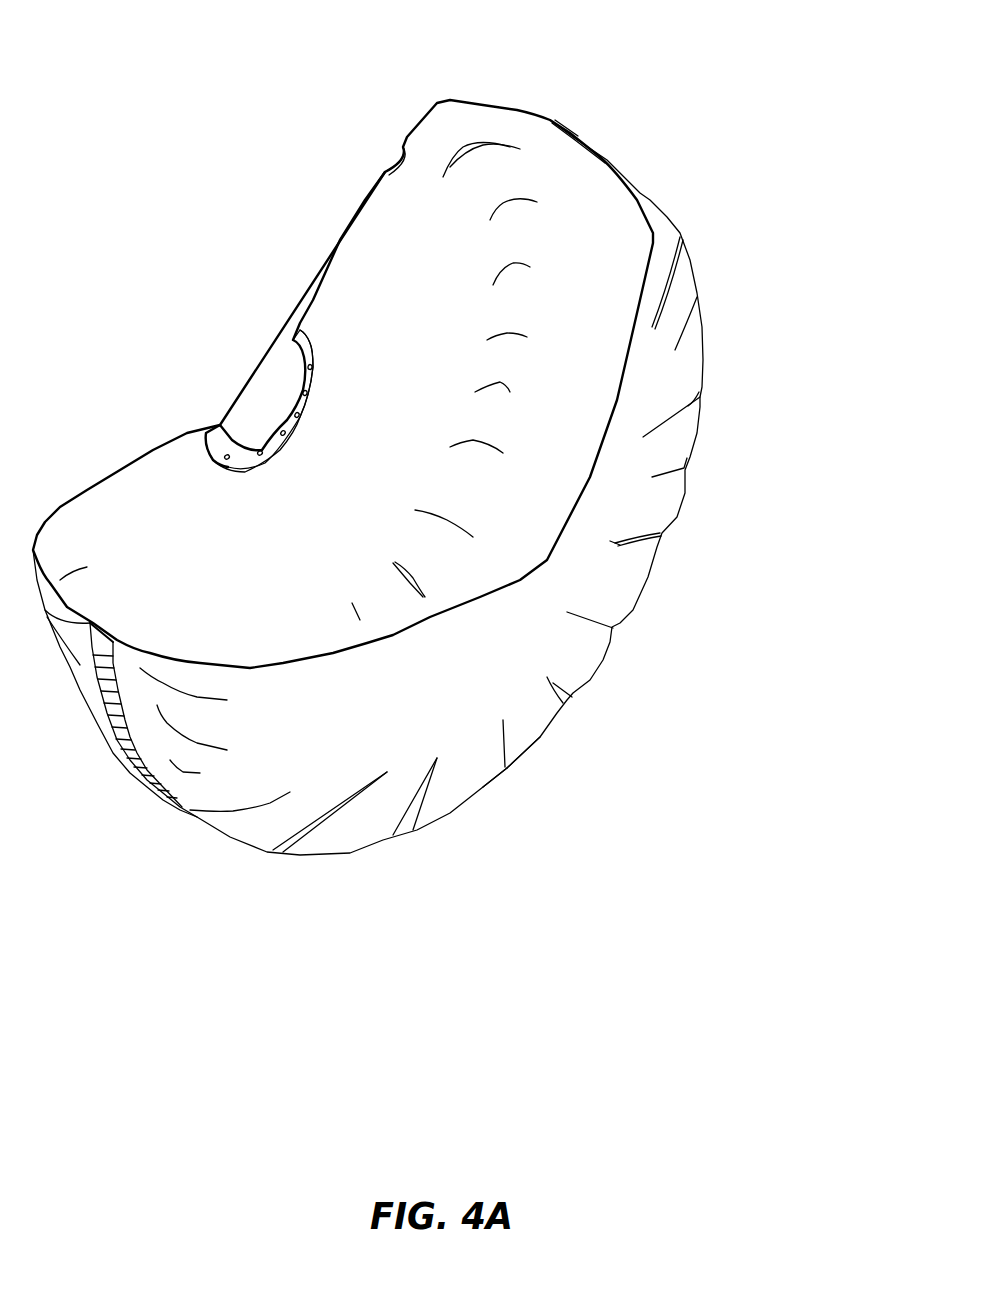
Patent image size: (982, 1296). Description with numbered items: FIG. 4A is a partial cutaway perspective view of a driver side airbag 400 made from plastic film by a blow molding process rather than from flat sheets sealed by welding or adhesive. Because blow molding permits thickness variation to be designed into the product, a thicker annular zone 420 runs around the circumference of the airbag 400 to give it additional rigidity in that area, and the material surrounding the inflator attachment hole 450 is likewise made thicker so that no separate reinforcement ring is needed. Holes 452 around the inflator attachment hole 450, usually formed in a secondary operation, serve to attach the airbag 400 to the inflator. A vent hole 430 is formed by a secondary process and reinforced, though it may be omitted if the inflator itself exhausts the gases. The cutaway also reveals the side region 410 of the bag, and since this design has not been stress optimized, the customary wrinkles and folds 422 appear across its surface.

The airbag 400 is at (600, 673).
The side panel 410 is at (690, 337).
The thicker annular zone 420 is at (577, 127).
The wrinkles and folds 422 is at (507, 768).
The vent hole 430 is at (400, 163).
The inflator attachment hole 450 is at (257, 410).
The holes 452 is at (310, 367).